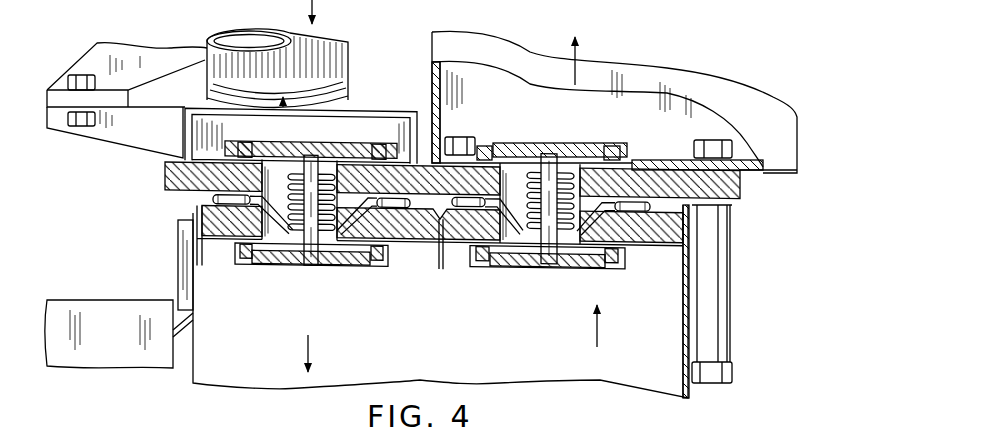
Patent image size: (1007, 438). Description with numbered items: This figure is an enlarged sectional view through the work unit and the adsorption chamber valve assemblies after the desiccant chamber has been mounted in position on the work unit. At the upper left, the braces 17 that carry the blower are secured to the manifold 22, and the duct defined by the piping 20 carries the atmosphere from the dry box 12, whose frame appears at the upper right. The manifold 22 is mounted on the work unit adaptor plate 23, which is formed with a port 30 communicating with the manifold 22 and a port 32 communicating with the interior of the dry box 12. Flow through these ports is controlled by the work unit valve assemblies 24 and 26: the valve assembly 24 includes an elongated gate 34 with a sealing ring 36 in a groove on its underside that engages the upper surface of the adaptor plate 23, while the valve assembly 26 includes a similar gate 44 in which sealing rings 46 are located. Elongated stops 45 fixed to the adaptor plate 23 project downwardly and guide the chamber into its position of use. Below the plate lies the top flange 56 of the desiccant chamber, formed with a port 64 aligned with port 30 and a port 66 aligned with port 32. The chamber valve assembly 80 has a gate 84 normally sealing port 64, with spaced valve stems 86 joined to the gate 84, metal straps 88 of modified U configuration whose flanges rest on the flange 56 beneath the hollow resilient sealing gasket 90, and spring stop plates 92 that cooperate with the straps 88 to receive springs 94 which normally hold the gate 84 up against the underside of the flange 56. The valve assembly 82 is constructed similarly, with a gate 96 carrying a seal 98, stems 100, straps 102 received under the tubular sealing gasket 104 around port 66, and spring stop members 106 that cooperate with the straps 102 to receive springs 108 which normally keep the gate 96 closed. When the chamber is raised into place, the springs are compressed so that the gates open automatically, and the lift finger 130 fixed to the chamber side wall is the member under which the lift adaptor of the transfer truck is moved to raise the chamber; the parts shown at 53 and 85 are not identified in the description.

The dry box 12 is at (493, 46).
The braces 17 is at (133, 55).
The piping 20 is at (298, 22).
The manifold 22 is at (183, 130).
The work unit adaptor plate 23 is at (743, 188).
The valve assembly 24 is at (338, 135).
The valve assembly 26 is at (522, 138).
The port 30 is at (272, 148).
The port 32 is at (600, 143).
The gate 34 is at (269, 100).
The sealing ring 36 is at (376, 143).
The gate 44 is at (583, 168).
The stops 45 is at (722, 262).
The sealing rings 46 is at (633, 148).
The pin 53 is at (440, 268).
The top flange 56 is at (173, 175).
The port 64 is at (267, 240).
The port 66 is at (622, 250).
The valve assembly 80 is at (292, 270).
The valve assembly 82 is at (517, 274).
The gate 84 is at (358, 262).
The block 85 is at (245, 252).
The valve stems 86 is at (313, 270).
The metal straps 88 is at (333, 232).
The sealing gasket 90 is at (213, 197).
The spring stop plates 92 is at (306, 160).
The springs 94 is at (327, 193).
The gate 96 is at (578, 260).
The seal 98 is at (615, 257).
The stems 100 is at (549, 266).
The straps 102 is at (505, 232).
The sealing gasket 104 is at (633, 200).
The spring stop members 106 is at (531, 175).
The springs 108 is at (608, 233).
The lift finger 130 is at (180, 253).